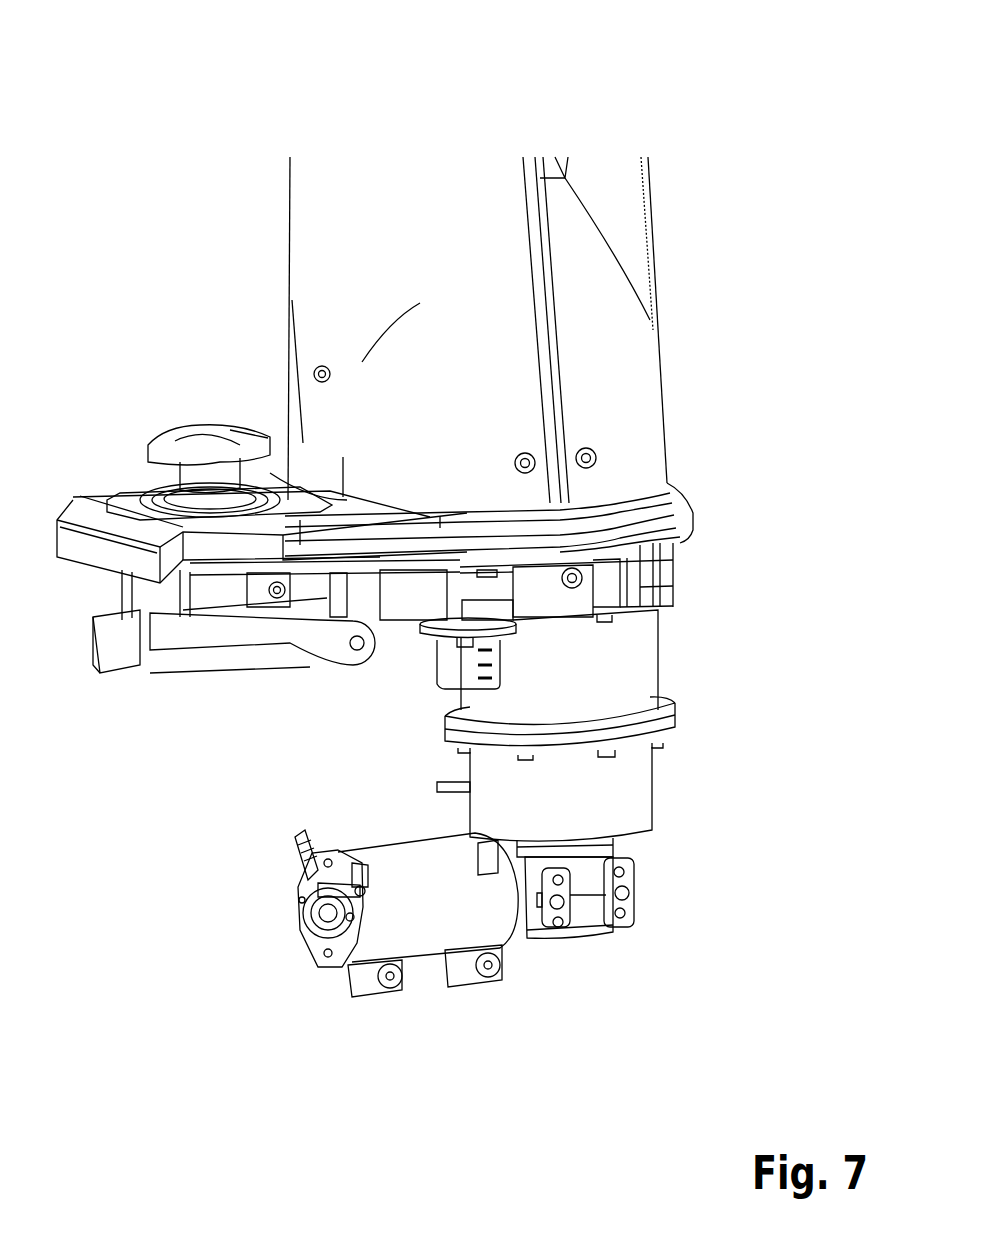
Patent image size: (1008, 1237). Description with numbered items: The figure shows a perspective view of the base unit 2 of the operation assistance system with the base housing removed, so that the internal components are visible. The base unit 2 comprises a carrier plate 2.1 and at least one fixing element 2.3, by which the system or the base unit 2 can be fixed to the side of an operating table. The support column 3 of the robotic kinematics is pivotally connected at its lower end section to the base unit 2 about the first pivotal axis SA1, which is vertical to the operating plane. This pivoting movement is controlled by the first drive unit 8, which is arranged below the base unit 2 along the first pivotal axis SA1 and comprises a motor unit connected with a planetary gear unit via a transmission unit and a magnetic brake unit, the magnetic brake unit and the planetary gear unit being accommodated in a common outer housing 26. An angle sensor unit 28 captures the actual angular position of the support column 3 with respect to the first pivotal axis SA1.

The first pivotal axis SA1 is at (462, 583).
The support column 3 is at (677, 278).
The base unit 2 is at (707, 598).
The carrier plate 2.1 is at (672, 508).
The fixing element 2.3 is at (128, 433).
The angle sensor unit 28 is at (453, 665).
The outer housing 26 is at (512, 688).
The first drive unit 8 is at (683, 803).